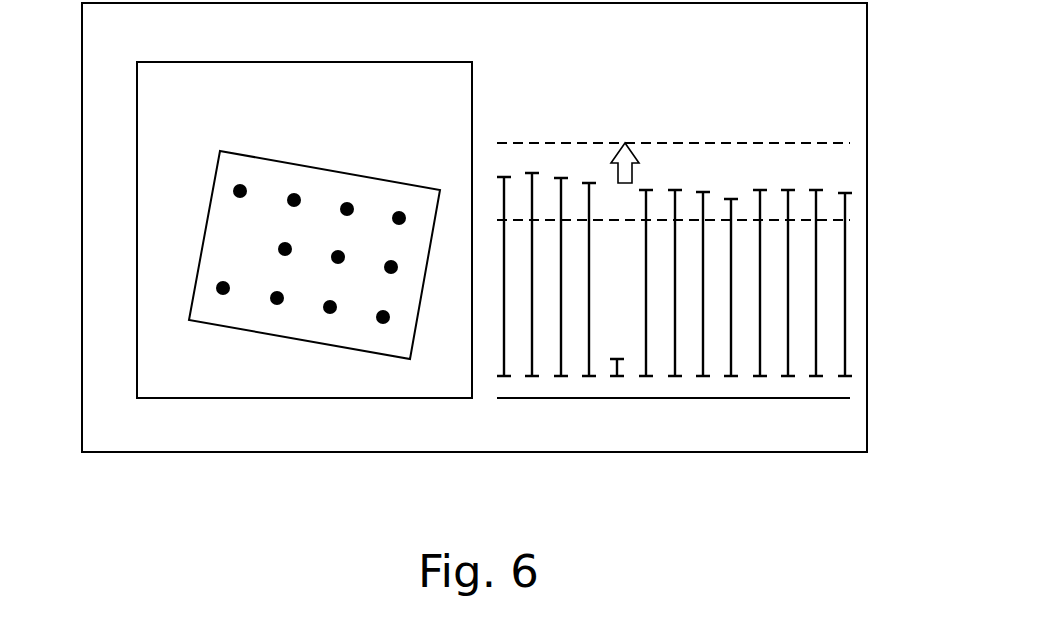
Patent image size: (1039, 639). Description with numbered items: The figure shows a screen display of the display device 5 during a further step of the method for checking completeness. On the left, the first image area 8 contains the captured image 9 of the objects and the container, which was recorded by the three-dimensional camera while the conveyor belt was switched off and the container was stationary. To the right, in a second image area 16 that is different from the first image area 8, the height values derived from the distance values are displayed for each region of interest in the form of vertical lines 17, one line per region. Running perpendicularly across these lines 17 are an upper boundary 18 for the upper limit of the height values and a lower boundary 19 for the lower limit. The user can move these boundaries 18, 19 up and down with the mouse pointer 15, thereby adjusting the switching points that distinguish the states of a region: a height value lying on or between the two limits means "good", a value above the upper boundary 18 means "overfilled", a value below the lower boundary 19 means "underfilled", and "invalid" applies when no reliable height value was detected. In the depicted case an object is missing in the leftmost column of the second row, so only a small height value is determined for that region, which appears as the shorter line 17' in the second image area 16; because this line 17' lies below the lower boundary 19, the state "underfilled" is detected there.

The display device 5 is at (175, 452).
The first image area 8 is at (285, 398).
The image 9 is at (367, 353).
The mouse pointer 15 is at (625, 143).
The second image area 16 is at (724, 82).
The lines corresponding to the height values 17 is at (674, 208).
The shorter line 17' is at (590, 432).
The upper boundary 18 is at (782, 143).
The lower boundary 19 is at (845, 220).